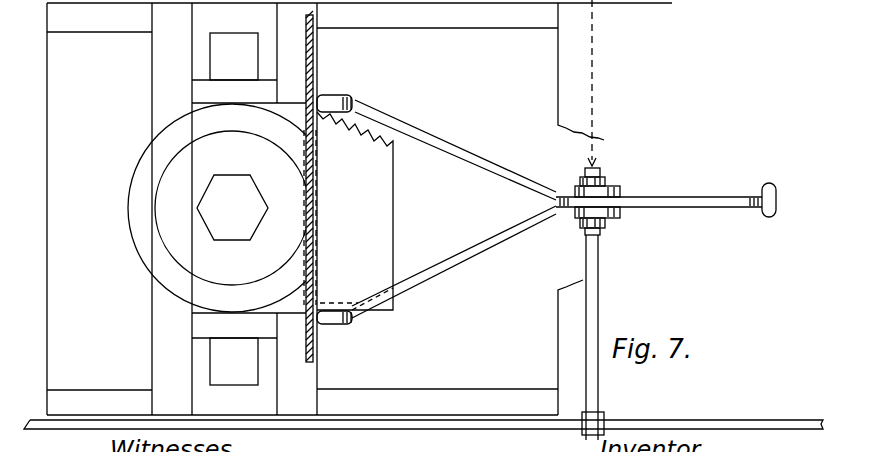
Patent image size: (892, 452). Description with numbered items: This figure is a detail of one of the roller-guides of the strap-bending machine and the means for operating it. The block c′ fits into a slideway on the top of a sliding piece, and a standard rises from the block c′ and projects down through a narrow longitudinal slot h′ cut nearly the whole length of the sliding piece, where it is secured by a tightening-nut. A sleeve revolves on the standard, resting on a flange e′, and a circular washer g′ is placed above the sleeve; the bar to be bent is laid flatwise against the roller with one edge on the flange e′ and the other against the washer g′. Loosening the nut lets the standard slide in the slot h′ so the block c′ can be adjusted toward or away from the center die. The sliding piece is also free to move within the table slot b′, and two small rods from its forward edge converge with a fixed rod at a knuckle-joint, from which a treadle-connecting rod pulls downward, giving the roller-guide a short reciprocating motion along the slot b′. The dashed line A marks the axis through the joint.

The block c′ is at (249, 209).
The narrow longitudinal slot h′ is at (234, 209).
The circular washer g′ is at (232, 208).
The slots b′ is at (268, 202).
The flange e′ is at (355, 211).
The axis line A is at (603, 83).